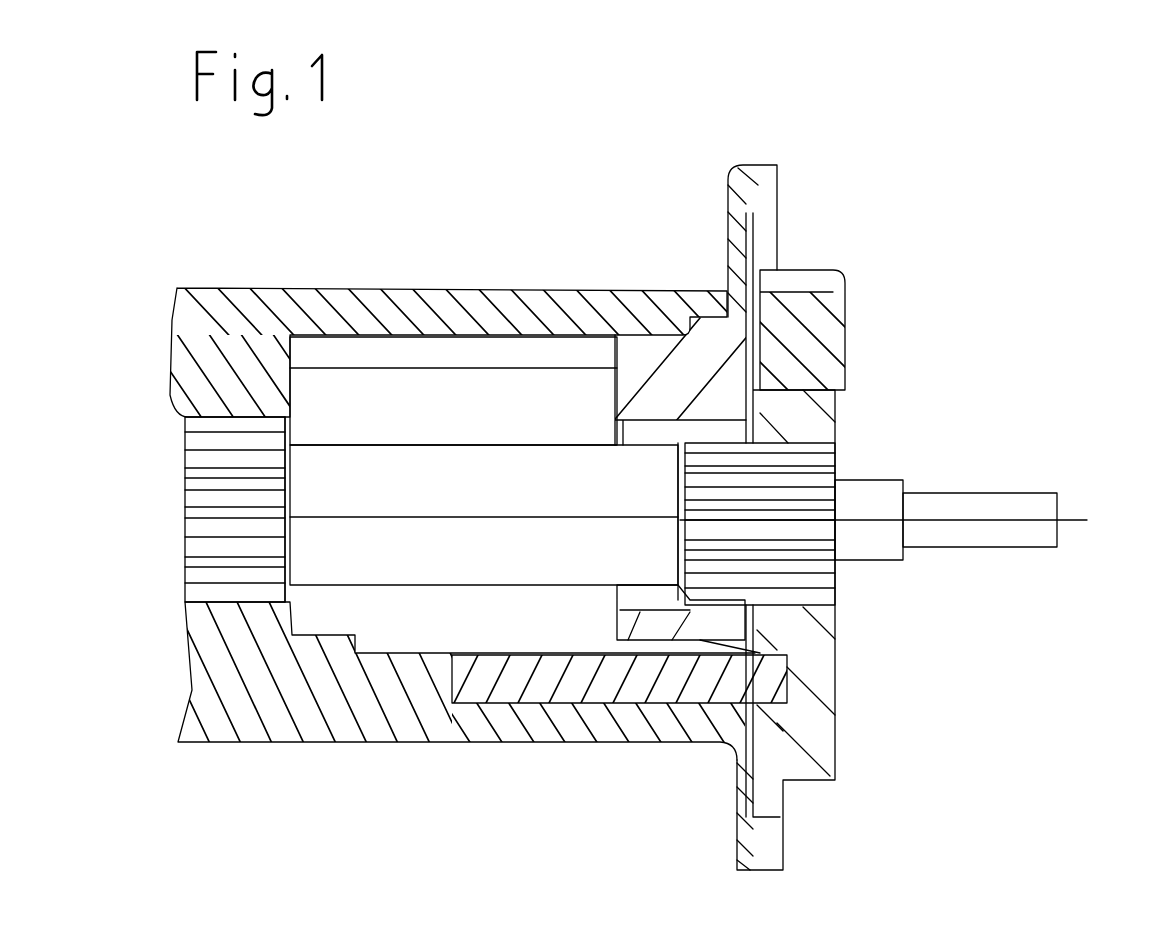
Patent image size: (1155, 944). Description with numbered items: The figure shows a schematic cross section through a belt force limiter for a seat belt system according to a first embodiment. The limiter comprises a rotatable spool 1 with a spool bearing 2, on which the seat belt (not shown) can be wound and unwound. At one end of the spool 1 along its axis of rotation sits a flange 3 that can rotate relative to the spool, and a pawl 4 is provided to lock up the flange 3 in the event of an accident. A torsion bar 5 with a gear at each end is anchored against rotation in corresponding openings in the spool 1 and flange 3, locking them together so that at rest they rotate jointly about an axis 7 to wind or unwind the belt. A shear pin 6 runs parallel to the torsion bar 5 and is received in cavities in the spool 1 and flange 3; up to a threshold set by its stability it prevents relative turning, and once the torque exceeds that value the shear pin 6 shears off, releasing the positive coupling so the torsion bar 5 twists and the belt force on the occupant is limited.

The spool 1 is at (430, 317).
The spool bearing 2 is at (685, 362).
The flange 3 is at (807, 420).
The pawl 4 is at (833, 340).
The torsion bar 5 is at (890, 498).
The shear pin 6 is at (620, 687).
The axis 7 is at (1075, 520).